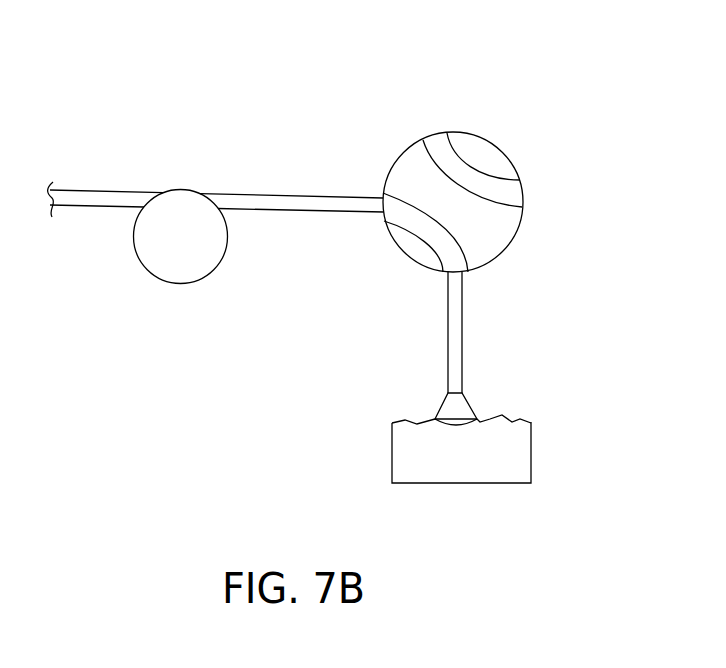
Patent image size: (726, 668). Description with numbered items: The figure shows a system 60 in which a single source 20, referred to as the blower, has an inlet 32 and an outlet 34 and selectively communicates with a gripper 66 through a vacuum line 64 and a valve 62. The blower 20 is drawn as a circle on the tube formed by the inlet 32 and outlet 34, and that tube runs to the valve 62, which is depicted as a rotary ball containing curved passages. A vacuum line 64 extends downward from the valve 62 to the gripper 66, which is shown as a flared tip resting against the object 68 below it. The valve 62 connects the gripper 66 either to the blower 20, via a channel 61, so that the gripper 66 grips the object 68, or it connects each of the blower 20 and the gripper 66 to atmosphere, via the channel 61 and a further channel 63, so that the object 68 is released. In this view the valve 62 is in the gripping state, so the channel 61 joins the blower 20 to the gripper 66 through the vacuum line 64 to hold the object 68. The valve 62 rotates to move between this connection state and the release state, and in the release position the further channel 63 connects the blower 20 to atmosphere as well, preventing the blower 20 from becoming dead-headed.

The single source 20 is at (180, 284).
The inlet 32 is at (275, 193).
The outlet 34 is at (108, 188).
The system 60 is at (453, 225).
The channel 61 is at (432, 253).
The valve 62 is at (402, 153).
The further channel 63 is at (486, 172).
The vacuum line 64 is at (463, 325).
The gripper 66 is at (468, 404).
The object 68 is at (532, 449).